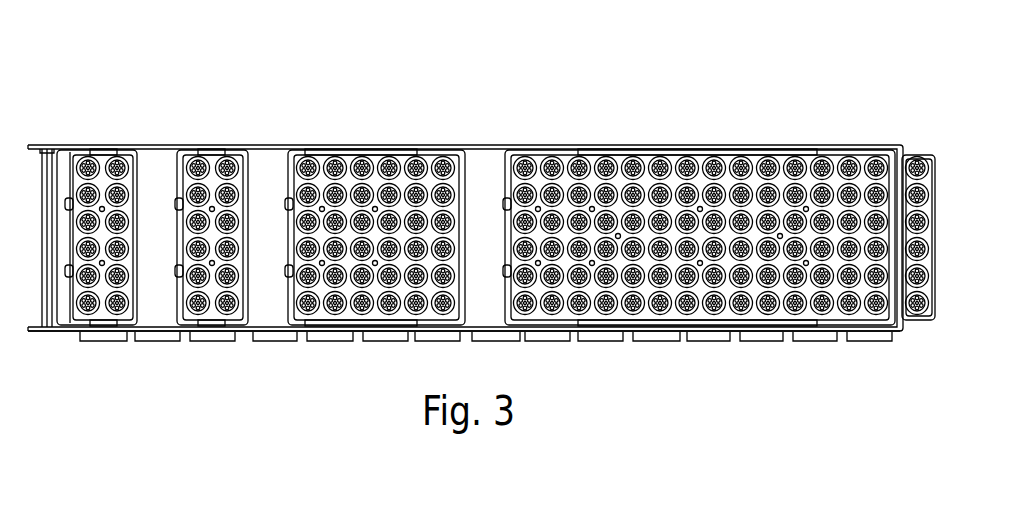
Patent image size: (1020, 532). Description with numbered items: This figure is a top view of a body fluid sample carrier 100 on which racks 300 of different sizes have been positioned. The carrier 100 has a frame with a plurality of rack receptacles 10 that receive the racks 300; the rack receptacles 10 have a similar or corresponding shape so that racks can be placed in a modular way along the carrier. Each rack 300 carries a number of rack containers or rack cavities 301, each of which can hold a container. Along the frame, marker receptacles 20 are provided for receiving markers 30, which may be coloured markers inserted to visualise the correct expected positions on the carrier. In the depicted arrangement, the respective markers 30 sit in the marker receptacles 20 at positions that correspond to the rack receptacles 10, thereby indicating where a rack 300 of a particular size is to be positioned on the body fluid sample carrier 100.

The body fluid sample carrier 100 is at (812, 108).
The rack receptacles 10 is at (254, 186).
The rack 300 is at (138, 180).
The rack container/rack cavity for carrying a container 301 is at (658, 190).
The marker receptacles 20 is at (210, 335).
The markers 30 is at (330, 340).